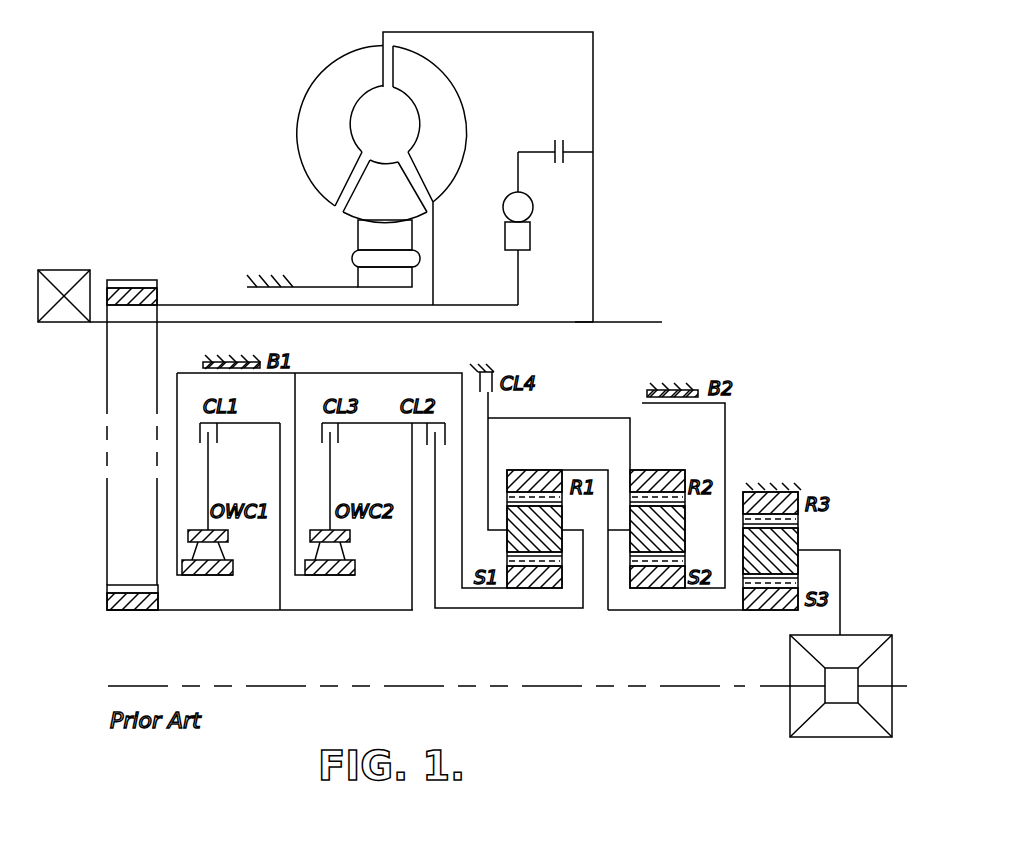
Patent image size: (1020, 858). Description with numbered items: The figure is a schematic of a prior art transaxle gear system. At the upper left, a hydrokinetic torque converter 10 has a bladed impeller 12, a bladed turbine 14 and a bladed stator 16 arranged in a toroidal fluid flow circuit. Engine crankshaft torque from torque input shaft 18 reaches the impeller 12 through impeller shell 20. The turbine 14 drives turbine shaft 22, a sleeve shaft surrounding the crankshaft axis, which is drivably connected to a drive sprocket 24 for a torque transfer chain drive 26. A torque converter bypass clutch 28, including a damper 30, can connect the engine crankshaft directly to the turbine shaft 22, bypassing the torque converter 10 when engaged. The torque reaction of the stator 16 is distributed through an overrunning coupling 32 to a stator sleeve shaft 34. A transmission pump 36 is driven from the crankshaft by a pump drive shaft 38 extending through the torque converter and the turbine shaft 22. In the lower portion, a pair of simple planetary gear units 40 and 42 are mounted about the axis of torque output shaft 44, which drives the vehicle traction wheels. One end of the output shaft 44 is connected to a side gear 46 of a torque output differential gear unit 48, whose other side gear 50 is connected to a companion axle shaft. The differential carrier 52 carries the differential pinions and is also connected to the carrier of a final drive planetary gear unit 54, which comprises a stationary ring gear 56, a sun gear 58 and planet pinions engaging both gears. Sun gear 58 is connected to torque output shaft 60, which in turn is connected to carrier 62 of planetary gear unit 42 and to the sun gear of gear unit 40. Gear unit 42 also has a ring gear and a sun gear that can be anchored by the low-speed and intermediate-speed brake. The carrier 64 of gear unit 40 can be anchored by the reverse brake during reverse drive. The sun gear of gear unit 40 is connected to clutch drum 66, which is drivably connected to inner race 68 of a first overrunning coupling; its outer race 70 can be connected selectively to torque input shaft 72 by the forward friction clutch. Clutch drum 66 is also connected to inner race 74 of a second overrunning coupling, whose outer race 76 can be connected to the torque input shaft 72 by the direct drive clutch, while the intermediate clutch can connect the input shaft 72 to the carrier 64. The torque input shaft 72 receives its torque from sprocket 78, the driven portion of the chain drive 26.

The hydrokinetic torque converter 10 is at (347, 176).
The bladed impeller 12 is at (353, 83).
The bladed turbine 14 is at (450, 143).
The bladed stator 16 is at (393, 196).
The torque input shaft 18 is at (625, 322).
The impeller shell 20 is at (594, 60).
The turbine shaft 22 is at (460, 305).
The drive sprocket 24 is at (157, 295).
The torque transfer chain drive 26 is at (105, 390).
The torque converter bypass clutch 28 is at (558, 165).
The damper 30 is at (530, 235).
The overrunning coupling 32 is at (355, 253).
The stator sleeve shaft 34 is at (312, 287).
The transmission pump 36 is at (66, 270).
The pump drive shaft 38 is at (575, 324).
The planetary gear unit 40 is at (531, 467).
The planetary gear unit 42 is at (657, 467).
The torque output shaft 44 is at (483, 688).
The side gear 46 is at (790, 665).
The torque output differential gear unit 48 is at (851, 633).
The side gear 50 is at (875, 710).
The differential carrier 52 is at (840, 580).
The final drive planetary gear unit 54 is at (811, 524).
The stationary ring gear 56 is at (764, 490).
The sun gear 58 is at (750, 612).
The torque output shaft 60 is at (670, 612).
The carrier 62 is at (618, 532).
The carrier 64 is at (497, 532).
The clutch drum 66 is at (385, 373).
The inner race 68 is at (205, 575).
The outer race 70 is at (188, 536).
The torque input shaft 72 is at (296, 612).
The inner race 74 is at (330, 575).
The outer race 76 is at (340, 536).
The sprocket 78 is at (120, 612).